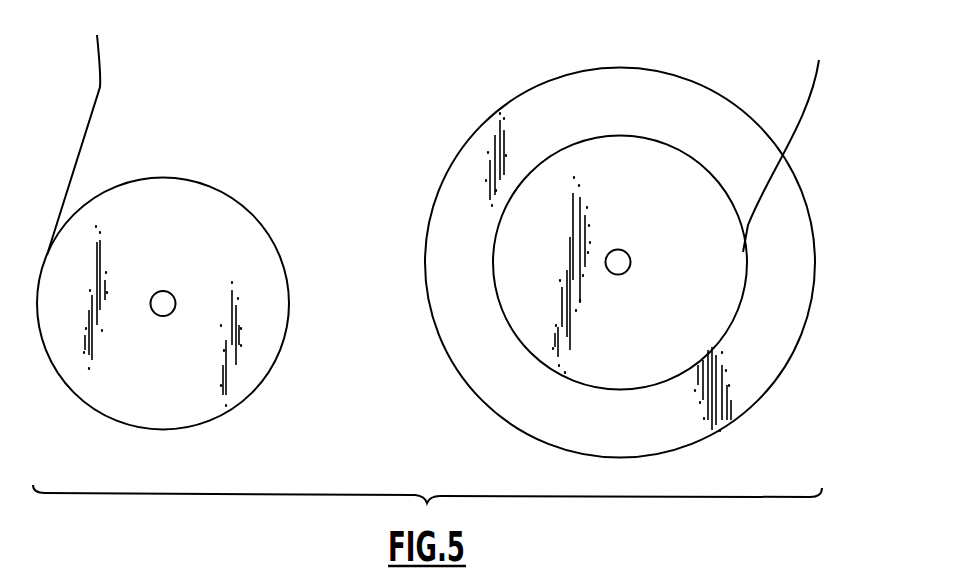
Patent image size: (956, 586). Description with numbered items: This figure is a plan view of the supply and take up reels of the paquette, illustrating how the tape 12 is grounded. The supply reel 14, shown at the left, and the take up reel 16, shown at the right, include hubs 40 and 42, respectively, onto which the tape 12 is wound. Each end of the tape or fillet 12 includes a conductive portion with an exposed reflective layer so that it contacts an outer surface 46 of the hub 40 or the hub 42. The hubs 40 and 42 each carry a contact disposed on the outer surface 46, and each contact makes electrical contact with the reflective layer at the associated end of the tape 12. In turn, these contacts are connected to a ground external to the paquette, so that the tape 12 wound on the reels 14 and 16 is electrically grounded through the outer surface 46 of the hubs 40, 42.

The tape 12 is at (100, 87).
The supply reel 14 is at (176, 286).
The take up reel 16 is at (702, 82).
The hub 40 is at (250, 207).
The hub 42 is at (728, 205).
The outer surface 46 is at (288, 303).